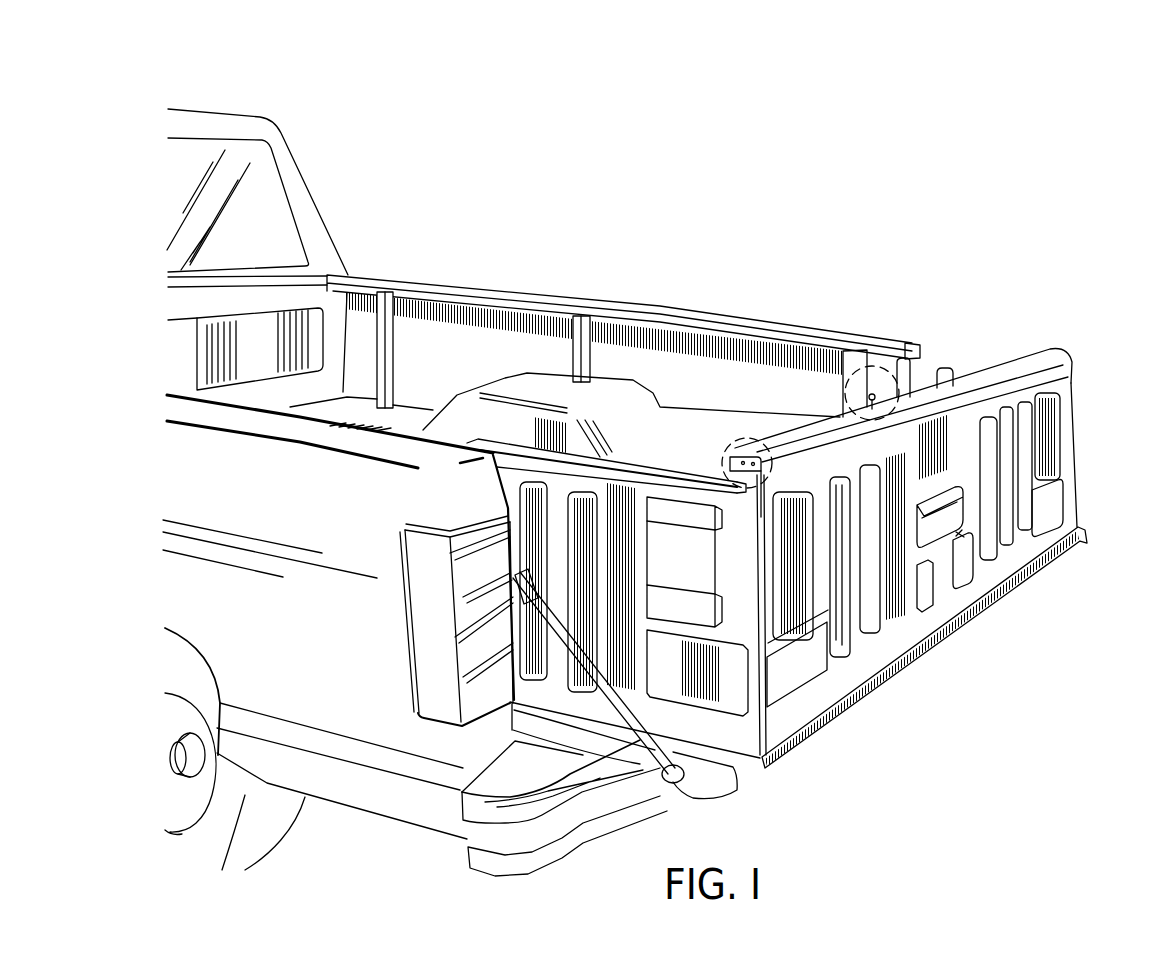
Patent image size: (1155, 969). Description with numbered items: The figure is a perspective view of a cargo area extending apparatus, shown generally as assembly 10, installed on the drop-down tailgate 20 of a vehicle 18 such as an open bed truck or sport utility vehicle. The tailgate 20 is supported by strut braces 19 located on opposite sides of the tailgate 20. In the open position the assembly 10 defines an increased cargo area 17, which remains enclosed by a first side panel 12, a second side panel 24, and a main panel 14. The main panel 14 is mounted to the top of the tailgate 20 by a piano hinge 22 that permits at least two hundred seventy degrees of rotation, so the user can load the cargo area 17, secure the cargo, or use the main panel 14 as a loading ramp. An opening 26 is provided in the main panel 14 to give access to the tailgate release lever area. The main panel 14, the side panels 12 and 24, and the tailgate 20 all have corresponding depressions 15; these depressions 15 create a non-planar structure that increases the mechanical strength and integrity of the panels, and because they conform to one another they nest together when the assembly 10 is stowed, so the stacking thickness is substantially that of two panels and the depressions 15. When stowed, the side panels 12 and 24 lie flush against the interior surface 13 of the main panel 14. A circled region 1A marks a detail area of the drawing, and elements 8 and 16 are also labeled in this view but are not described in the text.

The assembly 10 is at (1032, 221).
The increased cargo area 17 is at (405, 415).
The side panel 24 is at (623, 467).
The depressions 15 is at (680, 513).
The side panel 12 is at (973, 367).
The piano hinge 22 is at (1053, 552).
The main panel 14 is at (958, 535).
The opening 26 is at (932, 525).
The detail area 1A is at (750, 440).
The latch 8 is at (873, 370).
The strut braces 19 is at (648, 748).
The tailgate 20 is at (713, 782).
The lower edge 16 is at (785, 742).
The interior surface 13 is at (757, 783).
The vehicle 18 is at (330, 661).